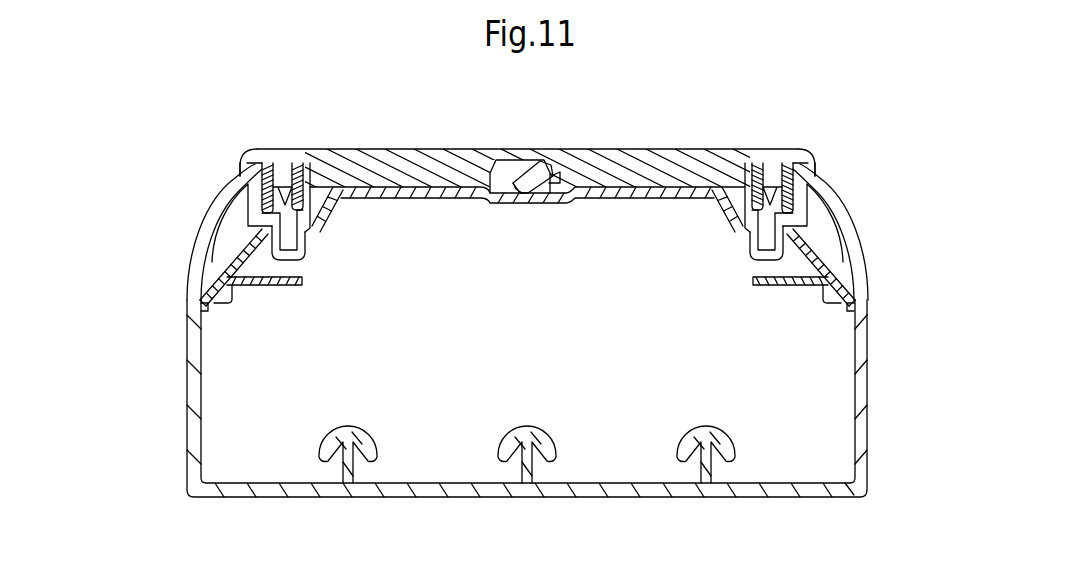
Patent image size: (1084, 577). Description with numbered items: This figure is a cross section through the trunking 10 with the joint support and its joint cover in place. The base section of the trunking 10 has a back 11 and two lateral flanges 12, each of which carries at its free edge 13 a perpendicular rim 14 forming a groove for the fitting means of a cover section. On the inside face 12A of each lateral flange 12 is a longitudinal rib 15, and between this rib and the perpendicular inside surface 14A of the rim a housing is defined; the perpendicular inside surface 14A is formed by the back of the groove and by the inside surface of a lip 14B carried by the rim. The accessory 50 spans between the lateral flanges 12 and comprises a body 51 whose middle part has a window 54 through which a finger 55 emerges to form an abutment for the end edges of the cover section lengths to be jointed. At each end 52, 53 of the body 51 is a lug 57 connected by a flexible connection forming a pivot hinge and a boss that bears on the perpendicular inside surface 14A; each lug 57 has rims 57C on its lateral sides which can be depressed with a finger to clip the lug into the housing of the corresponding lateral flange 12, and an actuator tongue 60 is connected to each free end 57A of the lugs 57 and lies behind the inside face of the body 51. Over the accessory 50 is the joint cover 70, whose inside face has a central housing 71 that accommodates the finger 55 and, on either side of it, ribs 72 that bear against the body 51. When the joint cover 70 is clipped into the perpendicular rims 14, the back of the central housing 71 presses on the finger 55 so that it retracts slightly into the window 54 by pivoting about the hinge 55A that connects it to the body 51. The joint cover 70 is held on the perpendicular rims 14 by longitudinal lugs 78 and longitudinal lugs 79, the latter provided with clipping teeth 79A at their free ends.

The trunking 10 is at (887, 368).
The back 11 is at (596, 499).
The lateral flange 12 is at (187, 432).
The inside face 12A is at (202, 412).
The free edge 13 is at (240, 166).
The perpendicular rim 14 is at (212, 186).
The perpendicular inside surface 14A is at (212, 207).
The lip 14B is at (286, 241).
The longitudinal rib 15 is at (207, 310).
The accessory 50 is at (622, 219).
The body 51 is at (651, 199).
The end 52 is at (330, 208).
The end 53 is at (723, 209).
The window 54 is at (553, 184).
The finger 55 is at (541, 163).
The hinge 55A is at (515, 193).
The lug 57 is at (225, 248).
The free end 57A is at (203, 303).
The rim 57C is at (220, 291).
The actuator tongue 60 is at (279, 288).
The joint cover 70 is at (598, 150).
The central housing 71 is at (505, 166).
The rib 72 is at (394, 172).
The longitudinal lug 78 is at (266, 163).
The longitudinal lug 79 is at (297, 163).
The clipping tooth 79A is at (287, 190).